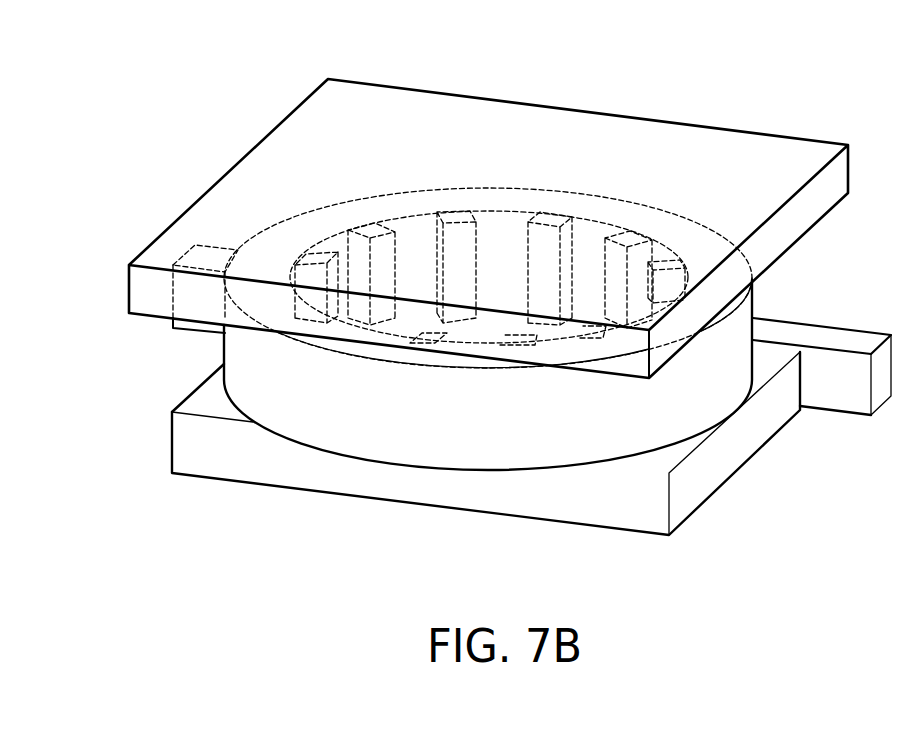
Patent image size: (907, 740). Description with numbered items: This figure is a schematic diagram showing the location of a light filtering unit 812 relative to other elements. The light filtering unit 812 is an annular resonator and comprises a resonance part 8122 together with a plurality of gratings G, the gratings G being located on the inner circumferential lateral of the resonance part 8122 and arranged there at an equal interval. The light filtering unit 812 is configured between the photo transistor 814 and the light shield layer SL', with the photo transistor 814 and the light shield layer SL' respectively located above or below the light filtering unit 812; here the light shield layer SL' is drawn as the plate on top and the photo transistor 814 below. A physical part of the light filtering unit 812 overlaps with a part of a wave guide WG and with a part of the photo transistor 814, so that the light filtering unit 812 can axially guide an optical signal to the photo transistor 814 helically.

The light filtering unit 812 is at (497, 390).
The resonance part 8122 is at (523, 428).
The photo transistor 814 is at (292, 458).
The gratings G is at (380, 290).
The light shield layer SL' is at (488, 202).
The wave guide WG is at (842, 339).